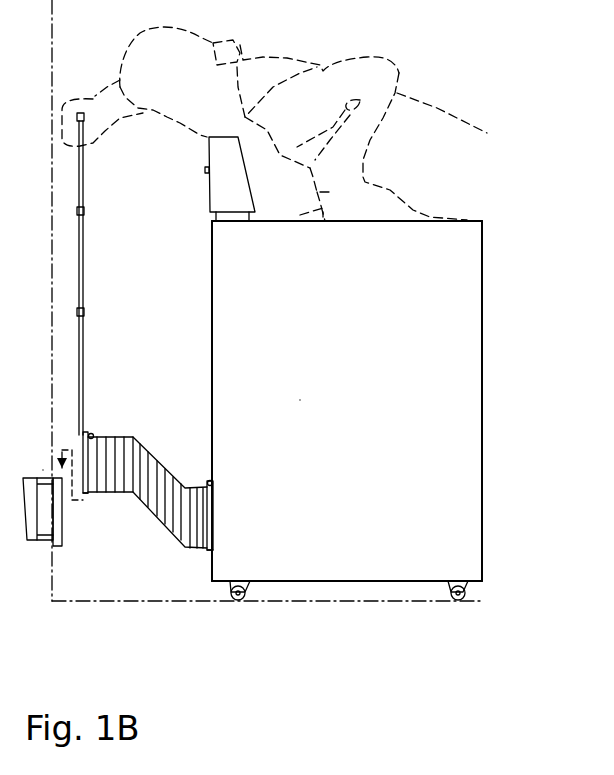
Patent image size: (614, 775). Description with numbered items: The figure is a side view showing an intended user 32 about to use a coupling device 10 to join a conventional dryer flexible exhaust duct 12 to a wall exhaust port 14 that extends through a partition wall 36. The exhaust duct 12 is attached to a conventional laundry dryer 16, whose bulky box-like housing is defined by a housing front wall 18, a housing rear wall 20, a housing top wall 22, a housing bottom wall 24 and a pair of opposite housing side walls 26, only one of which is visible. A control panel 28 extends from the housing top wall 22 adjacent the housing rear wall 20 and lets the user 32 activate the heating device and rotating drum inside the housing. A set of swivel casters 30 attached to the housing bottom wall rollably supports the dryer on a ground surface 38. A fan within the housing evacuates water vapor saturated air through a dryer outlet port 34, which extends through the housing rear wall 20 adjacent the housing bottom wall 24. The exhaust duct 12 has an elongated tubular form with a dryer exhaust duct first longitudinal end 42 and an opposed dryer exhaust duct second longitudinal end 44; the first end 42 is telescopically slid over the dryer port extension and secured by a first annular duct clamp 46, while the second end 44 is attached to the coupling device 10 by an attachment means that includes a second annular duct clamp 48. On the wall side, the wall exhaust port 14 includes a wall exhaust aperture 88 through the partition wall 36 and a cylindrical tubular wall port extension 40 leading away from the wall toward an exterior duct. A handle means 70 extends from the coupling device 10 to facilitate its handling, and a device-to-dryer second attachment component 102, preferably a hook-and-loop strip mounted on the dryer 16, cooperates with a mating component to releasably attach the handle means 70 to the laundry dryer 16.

The coupling device 10 is at (67, 419).
The dryer flexible exhaust duct 12 is at (148, 436).
The wall exhaust port 14 is at (43, 466).
The laundry dryer 16 is at (493, 331).
The housing front wall 18 is at (483, 450).
The housing rear wall 20 is at (211, 315).
The housing top wall 22 is at (395, 222).
The housing bottom wall 24 is at (430, 581).
The housing side wall 26 is at (448, 543).
The control panel 28 is at (227, 188).
The swivel casters 30 is at (238, 601).
The intended user 32 is at (440, 110).
The dryer outlet port 34 is at (203, 558).
The partition wall 36 is at (50, 218).
The ground surface 38 is at (328, 601).
The wall port extension 40 is at (37, 542).
The dryer exhaust duct first longitudinal end 42 is at (205, 476).
The dryer exhaust duct second longitudinal end 44 is at (89, 509).
The first annular duct clamp 46 is at (207, 528).
The second annular duct clamp 48 is at (93, 452).
The handle means 70 is at (92, 266).
The wall exhaust aperture 88 is at (53, 547).
The device-to-dryer second attachment component 102 is at (205, 171).